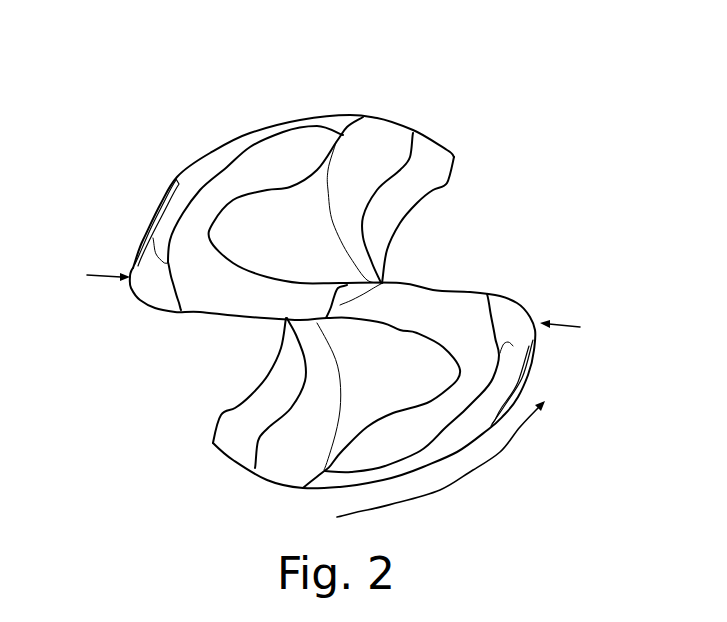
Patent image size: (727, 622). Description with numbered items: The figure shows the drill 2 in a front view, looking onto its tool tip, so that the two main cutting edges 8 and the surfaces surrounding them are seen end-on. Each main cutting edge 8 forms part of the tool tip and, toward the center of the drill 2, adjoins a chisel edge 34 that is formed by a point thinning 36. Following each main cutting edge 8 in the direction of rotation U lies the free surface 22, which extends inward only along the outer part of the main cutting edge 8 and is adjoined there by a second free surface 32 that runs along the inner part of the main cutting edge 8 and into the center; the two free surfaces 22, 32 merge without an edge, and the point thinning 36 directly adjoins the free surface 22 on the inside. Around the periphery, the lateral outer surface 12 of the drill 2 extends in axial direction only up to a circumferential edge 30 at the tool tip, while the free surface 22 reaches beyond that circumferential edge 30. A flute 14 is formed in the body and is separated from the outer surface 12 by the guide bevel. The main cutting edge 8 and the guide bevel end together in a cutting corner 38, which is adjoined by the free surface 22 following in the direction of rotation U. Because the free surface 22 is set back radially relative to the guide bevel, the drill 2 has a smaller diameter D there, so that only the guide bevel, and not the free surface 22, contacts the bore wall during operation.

The drill 2 is at (124, 180).
The main cutting edge 8 is at (210, 313).
The lateral outer surface 12 is at (195, 174).
The flute 14 is at (433, 150).
The free surface 22 is at (145, 268).
The circumferential edge 30 is at (320, 117).
The second free surface 32 is at (273, 150).
The chisel edge 34 is at (383, 283).
The point thinning 36 is at (378, 133).
The cutting corner 38 is at (130, 290).
The diameter D is at (560, 320).
The direction of rotation U is at (500, 457).